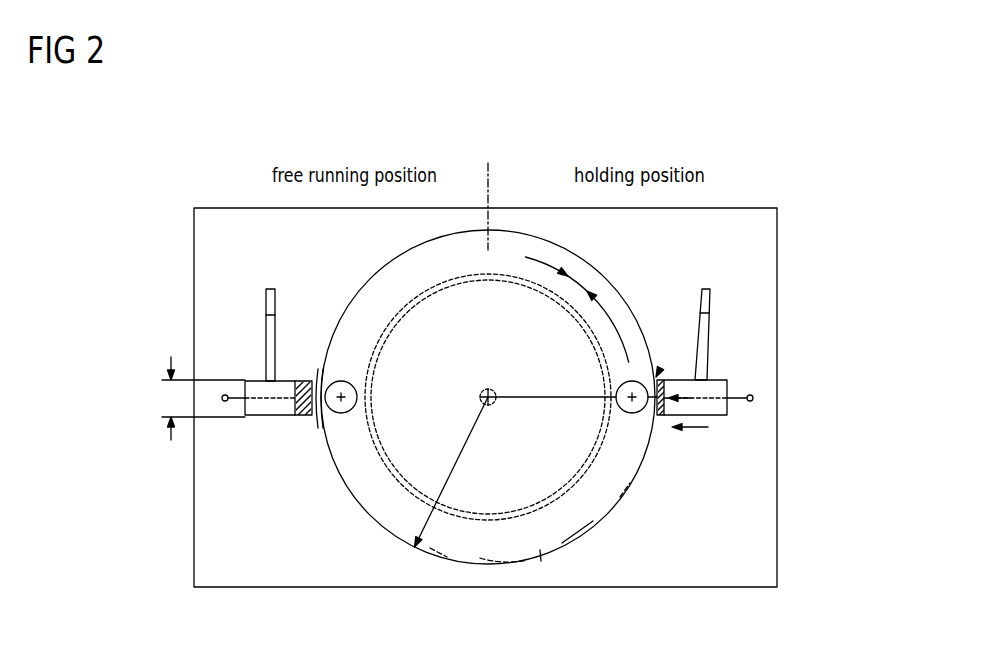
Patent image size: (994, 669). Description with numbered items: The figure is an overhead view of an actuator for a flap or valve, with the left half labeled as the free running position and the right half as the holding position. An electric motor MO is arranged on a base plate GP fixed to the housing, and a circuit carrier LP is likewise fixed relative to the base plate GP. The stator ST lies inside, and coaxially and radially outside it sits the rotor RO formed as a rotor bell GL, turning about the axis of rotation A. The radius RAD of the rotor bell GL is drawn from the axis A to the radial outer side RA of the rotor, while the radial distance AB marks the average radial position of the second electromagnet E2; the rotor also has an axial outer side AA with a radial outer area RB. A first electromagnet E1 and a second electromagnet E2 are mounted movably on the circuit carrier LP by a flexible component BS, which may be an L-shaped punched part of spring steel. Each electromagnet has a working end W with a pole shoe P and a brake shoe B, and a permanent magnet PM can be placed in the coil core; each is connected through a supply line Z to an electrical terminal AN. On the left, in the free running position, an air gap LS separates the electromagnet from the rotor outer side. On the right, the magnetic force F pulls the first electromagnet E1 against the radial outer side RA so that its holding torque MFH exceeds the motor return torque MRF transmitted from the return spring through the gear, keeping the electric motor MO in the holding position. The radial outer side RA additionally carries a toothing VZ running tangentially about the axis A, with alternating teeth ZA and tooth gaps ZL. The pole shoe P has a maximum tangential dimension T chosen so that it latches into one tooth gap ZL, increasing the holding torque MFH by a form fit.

The base plate GP is at (845, 267).
The circuit carrier LP is at (193, 297).
The radial outer side of the rotor RA is at (373, 279).
The radial outer area of the axial outer side RB is at (360, 325).
The rotor RO is at (554, 397).
The rotor bell GL is at (648, 448).
The stator ST is at (580, 463).
The axis of rotation A is at (491, 390).
The axial outer side AA is at (435, 441).
The radial distance AB is at (556, 387).
The radius of the rotor bell RAD is at (466, 472).
The motor return torque MRF is at (561, 268).
The holding torque MFH is at (605, 313).
The pole shoe P is at (327, 382).
The first electromagnet E1 is at (260, 381).
The second electromagnet E2 is at (341, 414).
The permanent magnet PM is at (299, 418).
The air gap LS is at (320, 430).
The brake shoe B is at (301, 348).
The working end W is at (315, 380).
The flexible component BS is at (267, 292).
The electrical terminal AN is at (225, 403).
The magnetic force F is at (689, 407).
The supply line Z is at (745, 397).
The tangential dimension T is at (170, 398).
The electric motor MO is at (288, 518).
The teeth ZA is at (467, 559).
The tooth gap ZL is at (500, 560).
The toothing VZ is at (564, 553).